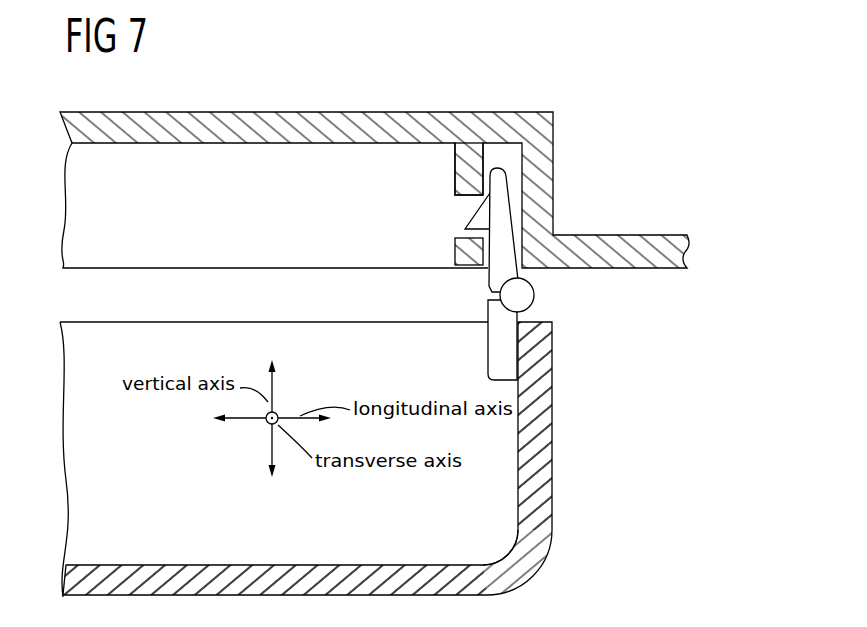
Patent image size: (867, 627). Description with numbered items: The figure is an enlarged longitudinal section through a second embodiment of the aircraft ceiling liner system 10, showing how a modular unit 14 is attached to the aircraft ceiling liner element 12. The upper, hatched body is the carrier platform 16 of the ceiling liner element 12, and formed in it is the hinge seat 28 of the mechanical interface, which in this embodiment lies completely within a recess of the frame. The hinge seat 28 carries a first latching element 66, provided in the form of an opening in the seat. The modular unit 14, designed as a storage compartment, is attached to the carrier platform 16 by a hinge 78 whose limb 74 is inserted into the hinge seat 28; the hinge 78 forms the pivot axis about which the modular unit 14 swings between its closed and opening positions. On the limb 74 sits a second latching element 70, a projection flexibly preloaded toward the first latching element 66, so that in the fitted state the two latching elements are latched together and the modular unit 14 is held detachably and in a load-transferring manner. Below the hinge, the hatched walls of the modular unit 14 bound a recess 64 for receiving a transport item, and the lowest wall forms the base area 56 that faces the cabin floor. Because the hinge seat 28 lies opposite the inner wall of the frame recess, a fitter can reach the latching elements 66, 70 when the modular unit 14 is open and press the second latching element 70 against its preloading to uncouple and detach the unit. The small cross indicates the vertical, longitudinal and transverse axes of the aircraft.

The aircraft ceiling liner system 10 is at (641, 408).
The aircraft ceiling liner element 12 is at (657, 222).
The modular unit 14 is at (566, 460).
The carrier platform 16 is at (150, 143).
The first hinge seat 28 is at (502, 128).
The base area 56 is at (147, 572).
The recess 64 is at (479, 507).
The first latching element 66 is at (438, 197).
The second latching element 70 is at (465, 228).
The limb 74 is at (500, 208).
The first hinge 78 is at (551, 303).